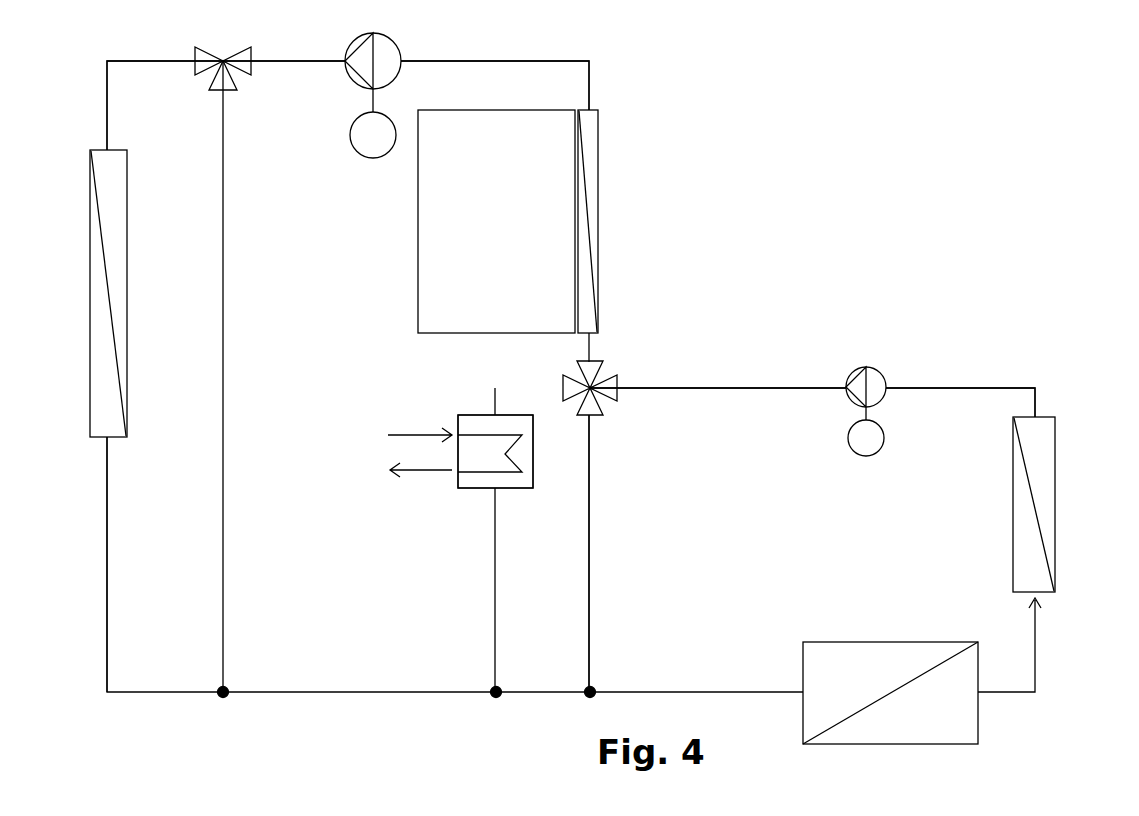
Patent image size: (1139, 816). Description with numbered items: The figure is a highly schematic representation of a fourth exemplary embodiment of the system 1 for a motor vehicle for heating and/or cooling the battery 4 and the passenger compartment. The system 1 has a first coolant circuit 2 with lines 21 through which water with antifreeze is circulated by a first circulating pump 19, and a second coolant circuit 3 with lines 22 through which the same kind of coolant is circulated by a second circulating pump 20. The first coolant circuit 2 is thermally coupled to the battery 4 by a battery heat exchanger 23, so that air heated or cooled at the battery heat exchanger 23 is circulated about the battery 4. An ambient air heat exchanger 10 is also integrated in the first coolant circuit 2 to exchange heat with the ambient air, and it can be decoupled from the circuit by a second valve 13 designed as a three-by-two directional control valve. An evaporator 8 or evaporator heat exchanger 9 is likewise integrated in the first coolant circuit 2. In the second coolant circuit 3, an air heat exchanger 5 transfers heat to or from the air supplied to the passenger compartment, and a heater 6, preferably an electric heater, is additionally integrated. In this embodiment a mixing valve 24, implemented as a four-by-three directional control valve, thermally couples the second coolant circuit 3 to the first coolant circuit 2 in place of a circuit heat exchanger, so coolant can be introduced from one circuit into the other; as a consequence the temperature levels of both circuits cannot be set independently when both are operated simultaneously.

The system 1 is at (947, 125).
The first coolant circuit 2 is at (646, 94).
The second coolant circuit 3 is at (828, 308).
The battery 4 is at (418, 320).
The air heat exchanger 5 is at (1045, 427).
The heater 6 is at (857, 642).
The evaporator 8 is at (480, 478).
The evaporator heat exchanger 9 is at (495, 451).
The ambient air heat exchanger 10 is at (113, 252).
The second valve 13 is at (213, 78).
The first circulating pump 19 is at (358, 148).
The second circulating pump 20 is at (862, 458).
The lines 21 is at (108, 588).
The lines 22 is at (940, 383).
The battery heat exchanger 23 is at (595, 140).
The mixing valve 24 is at (613, 373).